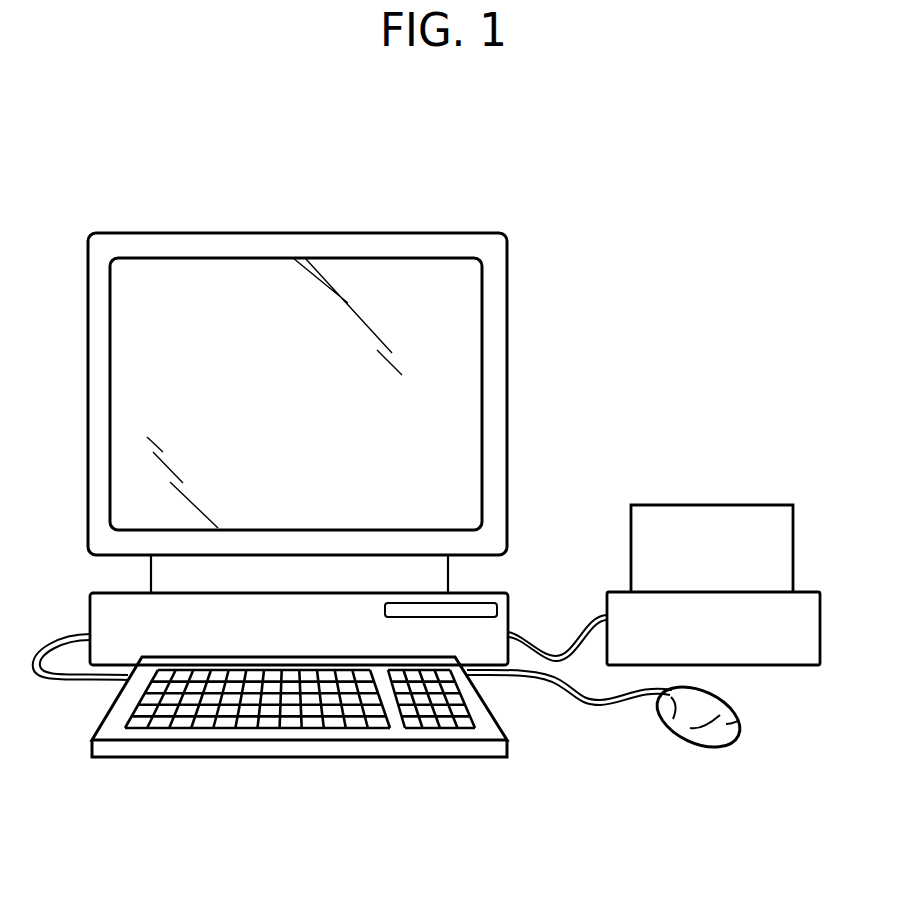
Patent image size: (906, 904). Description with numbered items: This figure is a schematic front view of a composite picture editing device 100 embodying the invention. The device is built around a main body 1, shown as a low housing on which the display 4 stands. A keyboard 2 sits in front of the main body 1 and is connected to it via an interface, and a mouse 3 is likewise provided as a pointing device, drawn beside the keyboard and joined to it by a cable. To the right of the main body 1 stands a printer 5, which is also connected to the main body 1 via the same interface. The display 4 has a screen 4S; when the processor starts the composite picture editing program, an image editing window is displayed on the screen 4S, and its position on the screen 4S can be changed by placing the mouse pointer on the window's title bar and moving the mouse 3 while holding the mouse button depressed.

The composite picture editing device 100 is at (589, 276).
The main body 1 is at (95, 603).
The keyboard 2 is at (500, 720).
The mouse 3 is at (740, 723).
The display 4 is at (202, 245).
The screen 4S is at (364, 257).
The printer 5 is at (810, 600).